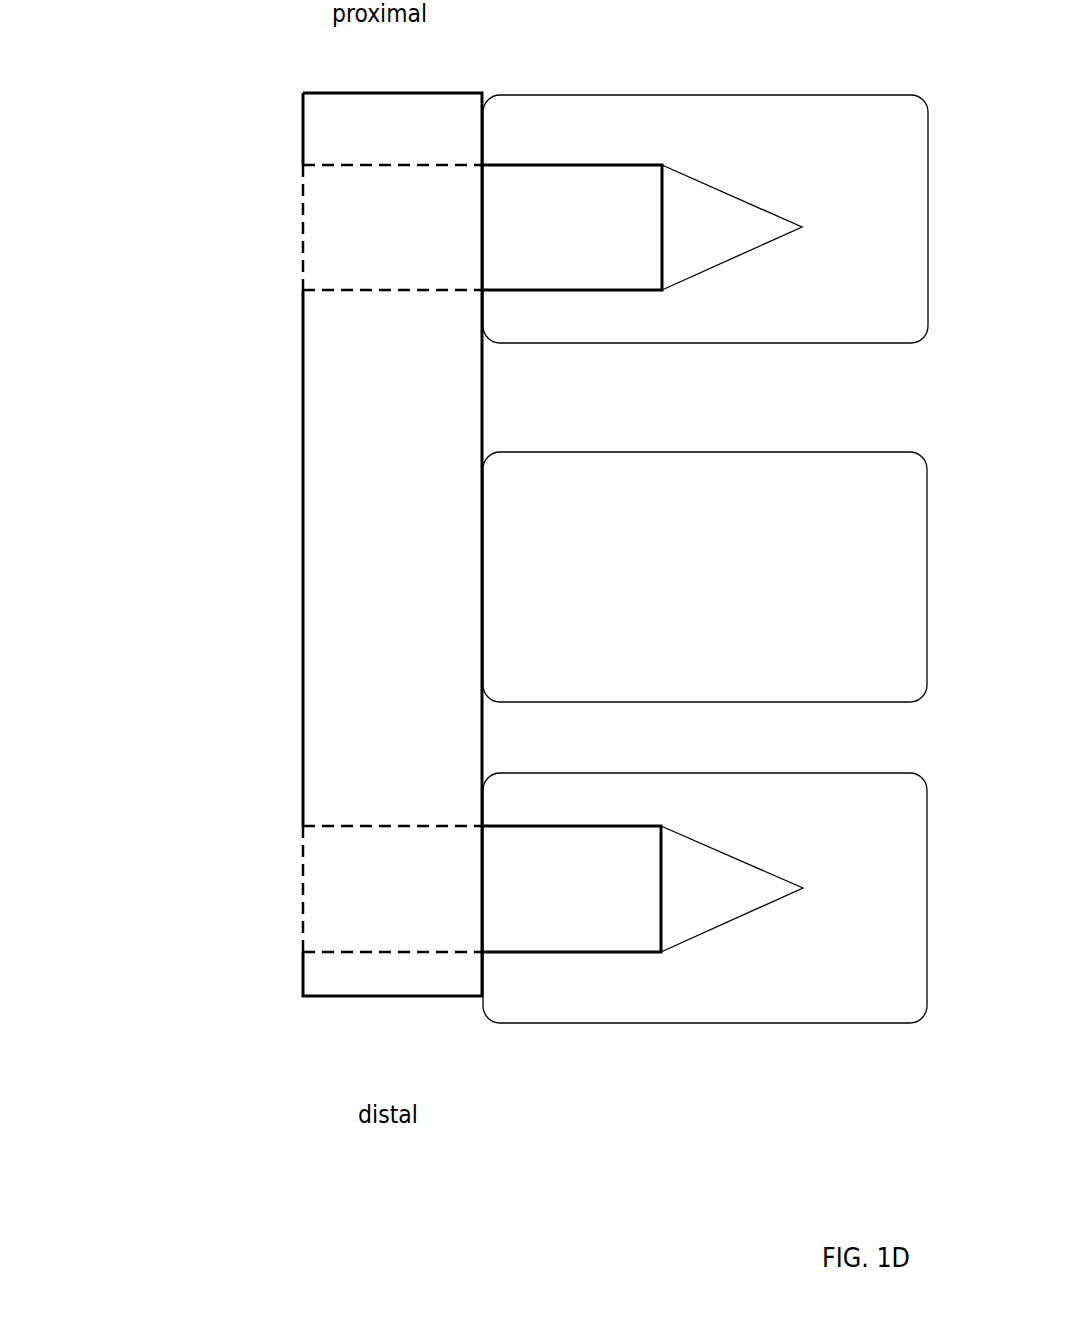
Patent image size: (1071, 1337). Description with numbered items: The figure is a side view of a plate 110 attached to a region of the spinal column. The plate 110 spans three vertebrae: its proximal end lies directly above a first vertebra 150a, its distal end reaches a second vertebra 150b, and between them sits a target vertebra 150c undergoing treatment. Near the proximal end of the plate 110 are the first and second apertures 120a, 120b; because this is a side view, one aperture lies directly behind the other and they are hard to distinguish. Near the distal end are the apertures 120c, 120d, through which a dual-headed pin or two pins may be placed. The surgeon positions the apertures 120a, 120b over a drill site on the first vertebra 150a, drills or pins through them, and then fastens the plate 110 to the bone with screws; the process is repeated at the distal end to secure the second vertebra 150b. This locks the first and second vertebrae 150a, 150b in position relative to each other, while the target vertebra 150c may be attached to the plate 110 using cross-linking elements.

The plate 110 is at (338, 469).
The first aperture 120a is at (333, 253).
The second aperture 120b is at (303, 165).
The third aperture 120c is at (333, 867).
The fourth aperture 120d is at (333, 930).
The first vertebra 150a is at (873, 325).
The second vertebra 150b is at (887, 995).
The target vertebra 150c is at (705, 577).